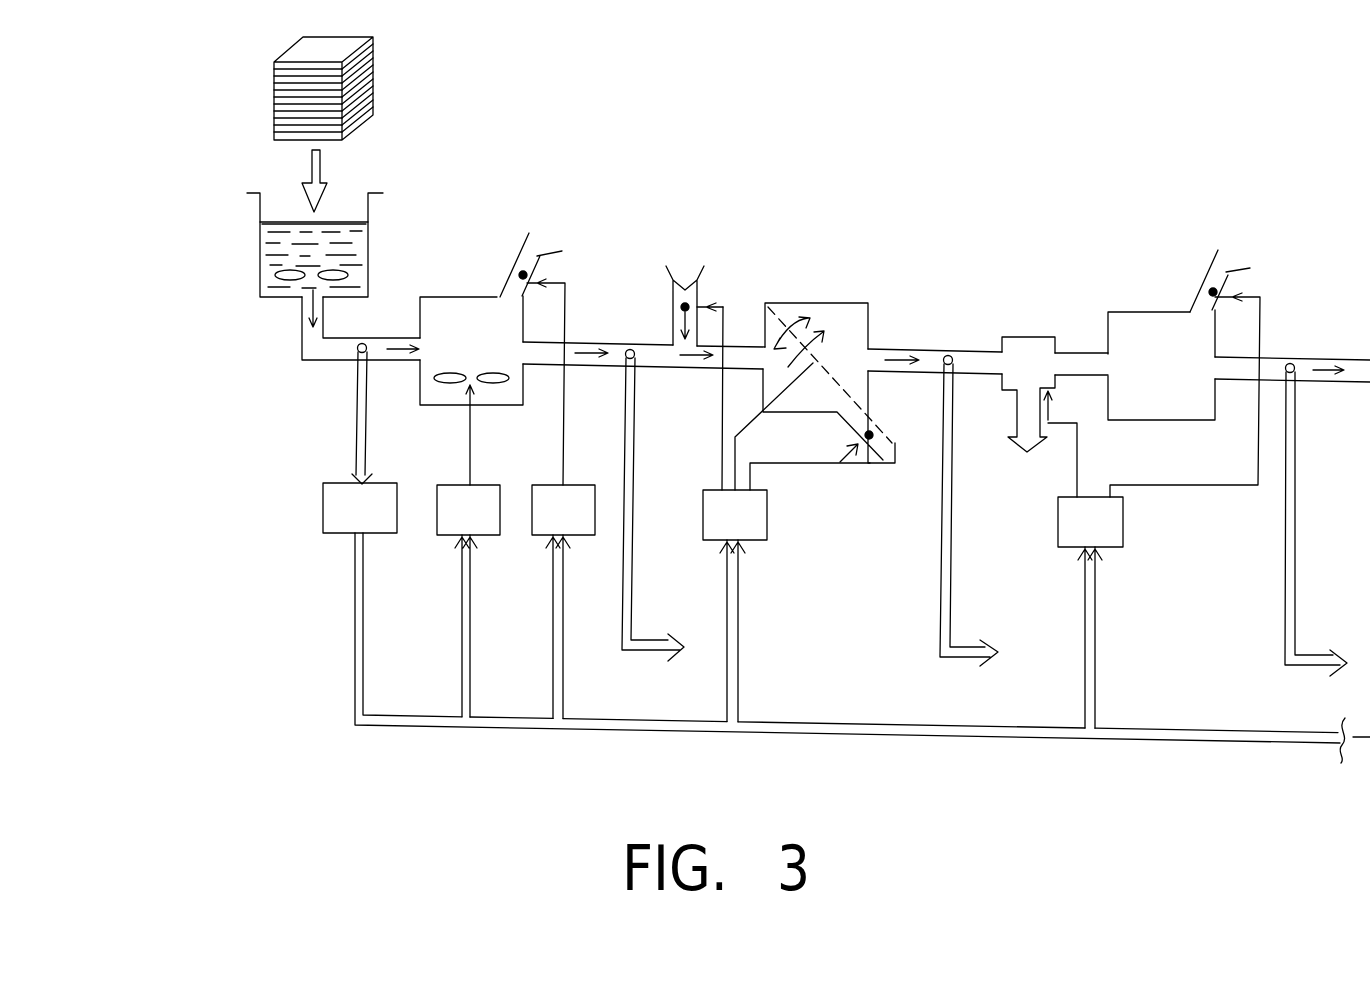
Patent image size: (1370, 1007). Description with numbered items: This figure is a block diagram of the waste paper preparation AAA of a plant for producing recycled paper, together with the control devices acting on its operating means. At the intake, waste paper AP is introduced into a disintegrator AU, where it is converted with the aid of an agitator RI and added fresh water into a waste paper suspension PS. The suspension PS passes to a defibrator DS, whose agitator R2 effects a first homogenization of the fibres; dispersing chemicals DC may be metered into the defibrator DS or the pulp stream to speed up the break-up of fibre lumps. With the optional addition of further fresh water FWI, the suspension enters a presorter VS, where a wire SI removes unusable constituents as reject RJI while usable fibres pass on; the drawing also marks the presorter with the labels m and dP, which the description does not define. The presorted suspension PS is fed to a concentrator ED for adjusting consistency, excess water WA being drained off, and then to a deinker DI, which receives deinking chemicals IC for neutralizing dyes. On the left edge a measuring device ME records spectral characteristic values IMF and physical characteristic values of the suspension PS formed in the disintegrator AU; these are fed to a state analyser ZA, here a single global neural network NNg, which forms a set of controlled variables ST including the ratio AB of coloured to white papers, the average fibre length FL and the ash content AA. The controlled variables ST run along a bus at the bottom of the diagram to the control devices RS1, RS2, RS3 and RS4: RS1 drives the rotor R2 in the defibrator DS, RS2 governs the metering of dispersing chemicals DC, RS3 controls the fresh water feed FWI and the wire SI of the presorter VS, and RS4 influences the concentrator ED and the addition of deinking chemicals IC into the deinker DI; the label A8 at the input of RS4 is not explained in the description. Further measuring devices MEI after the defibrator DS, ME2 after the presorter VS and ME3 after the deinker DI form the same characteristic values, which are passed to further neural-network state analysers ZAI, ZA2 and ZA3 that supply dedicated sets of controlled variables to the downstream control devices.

The waste paper AP is at (363, 167).
The disintegrator AU is at (295, 225).
The agitator RI is at (347, 277).
The measuring device ME is at (367, 345).
The waste paper suspension PS is at (302, 342).
The spectral characteristic values IMF is at (357, 402).
The global neural network NNg is at (360, 508).
The state analyser ZA is at (323, 503).
The controlled variables ST is at (353, 568).
The ratio of coloured papers to white papers AB is at (353, 635).
The defibrator DS is at (453, 296).
The agitator R2 is at (460, 376).
The dispersing chemicals DC is at (536, 348).
The measuring device MEI is at (630, 349).
The state analyser ZAI is at (653, 643).
The average fibre length FL is at (563, 688).
The fresh water FWI is at (693, 363).
The presorter VS is at (853, 303).
The wire SI is at (846, 394).
The mass flow m is at (817, 347).
The pressure difference dP is at (793, 323).
The reject RJI is at (900, 485).
The closed-loop or open-loop control device RS1 is at (468, 601).
The closed-loop or open-loop control device RS2 is at (563, 602).
The closed-loop or open-loop control device RS3 is at (735, 606).
The ash content AA is at (738, 635).
The closed-loop or open-loop control device RS4 is at (1090, 612).
The control actions A8,AZ,AB,AT,AS A8 is at (1097, 593).
The measuring device ME2 is at (952, 355).
The state analyser ZA2 is at (965, 650).
The concentrator ED is at (1040, 338).
The excess water WA is at (1027, 477).
The deinker DI is at (1137, 312).
The deinking chemicals IC is at (1221, 274).
The measuring device ME3 is at (1298, 363).
The state analyser ZA3 is at (1317, 655).
The waste paper preparation AAA is at (987, 214).